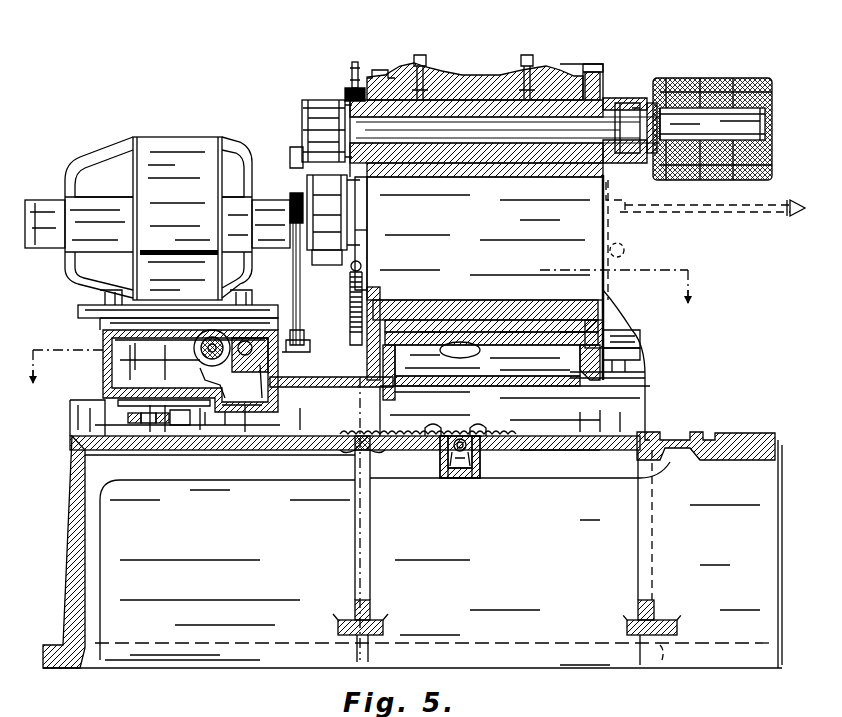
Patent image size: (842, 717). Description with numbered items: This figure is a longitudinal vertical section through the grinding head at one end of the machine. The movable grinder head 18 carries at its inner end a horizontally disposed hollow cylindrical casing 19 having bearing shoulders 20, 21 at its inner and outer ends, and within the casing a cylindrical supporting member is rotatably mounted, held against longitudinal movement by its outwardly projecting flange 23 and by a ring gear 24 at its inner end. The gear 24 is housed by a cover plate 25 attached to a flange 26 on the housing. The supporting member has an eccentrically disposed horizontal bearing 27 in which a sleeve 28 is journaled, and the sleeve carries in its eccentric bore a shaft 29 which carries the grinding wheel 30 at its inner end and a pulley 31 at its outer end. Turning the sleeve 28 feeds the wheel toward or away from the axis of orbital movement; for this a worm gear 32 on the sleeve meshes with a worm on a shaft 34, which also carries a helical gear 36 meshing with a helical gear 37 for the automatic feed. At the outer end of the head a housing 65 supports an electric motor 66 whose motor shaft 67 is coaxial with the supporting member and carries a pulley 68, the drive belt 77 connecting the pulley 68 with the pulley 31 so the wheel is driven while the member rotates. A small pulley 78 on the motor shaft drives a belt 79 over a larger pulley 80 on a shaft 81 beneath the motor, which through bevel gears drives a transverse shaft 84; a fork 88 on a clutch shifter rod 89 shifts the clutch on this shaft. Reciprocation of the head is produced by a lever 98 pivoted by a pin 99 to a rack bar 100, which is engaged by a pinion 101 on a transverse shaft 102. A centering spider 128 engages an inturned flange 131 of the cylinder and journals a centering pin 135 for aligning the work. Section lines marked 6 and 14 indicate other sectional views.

The section line 6- 6 is at (359, 340).
The section line 14- 14 is at (372, 363).
The grinder head 18 is at (638, 336).
The hollow cylindrical casing 19 is at (560, 70).
The bearing shoulder 20 is at (585, 342).
The bearing shoulder 21 is at (412, 366).
The outwardly projecting flange 23 is at (392, 316).
The ring gear 24 is at (612, 325).
The cover plate 25 is at (636, 358).
The flange 26 is at (598, 68).
The eccentrically disposed horizontal bearing 27 is at (470, 183).
The sleeve 28 is at (538, 183).
The shaft 29 is at (484, 74).
The grinding wheel 30 is at (710, 78).
The pulley 31 is at (300, 128).
The worm gear 32 is at (340, 100).
The shaft 34 is at (356, 62).
The helical gear 36 is at (347, 92).
The helical gear 37 is at (378, 72).
The housing 65 is at (100, 328).
The electric motor 66 is at (168, 161).
The motor shaft 67 is at (290, 155).
The pulley 68 is at (368, 234).
The drive belt 77 is at (370, 262).
The small pulley 78 is at (292, 192).
The belt 79 is at (292, 280).
The larger pulley 80 is at (345, 322).
The shaft 81 is at (296, 345).
The transverse shaft 84 is at (216, 348).
The fork 88 is at (196, 415).
The clutch shifter rod 89 is at (256, 413).
The lever 98 is at (148, 402).
The pin 99 is at (143, 440).
The rack bar 100 is at (318, 450).
The pinion 101 is at (468, 455).
The transverse shaft 102 is at (452, 462).
The spider 128 is at (615, 190).
The inturned flange 131 is at (603, 294).
The centering pin 135 is at (700, 218).